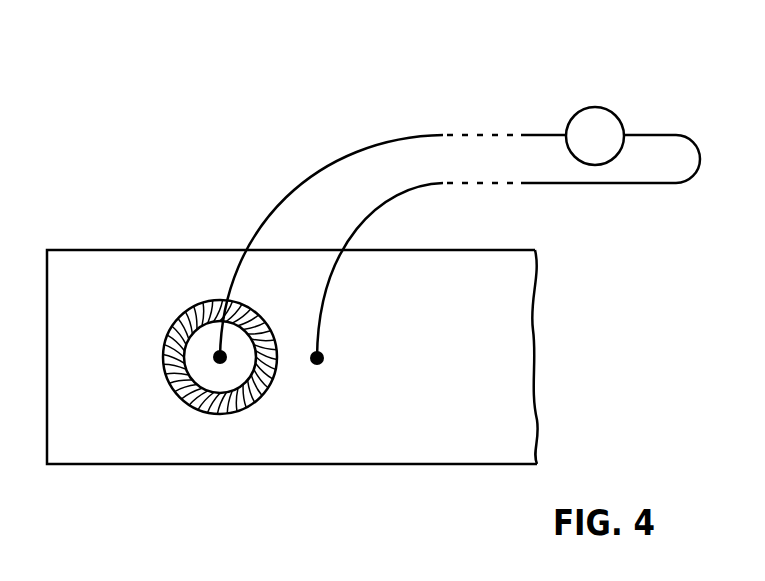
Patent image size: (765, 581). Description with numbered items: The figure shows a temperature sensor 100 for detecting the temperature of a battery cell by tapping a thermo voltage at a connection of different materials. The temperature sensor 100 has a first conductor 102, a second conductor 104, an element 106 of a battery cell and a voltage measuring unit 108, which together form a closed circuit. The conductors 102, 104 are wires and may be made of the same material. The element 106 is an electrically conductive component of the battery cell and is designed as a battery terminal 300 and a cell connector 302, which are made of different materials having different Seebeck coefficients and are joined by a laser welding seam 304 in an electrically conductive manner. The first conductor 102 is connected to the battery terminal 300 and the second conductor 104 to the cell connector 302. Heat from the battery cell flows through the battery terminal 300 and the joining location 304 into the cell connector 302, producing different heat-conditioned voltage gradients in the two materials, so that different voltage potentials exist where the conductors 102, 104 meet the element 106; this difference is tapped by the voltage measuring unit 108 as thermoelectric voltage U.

The temperature sensor 100 is at (200, 138).
The first conductor 102 is at (318, 168).
The second conductor 104 is at (653, 185).
The element of a battery cell 106 is at (92, 249).
The voltage measuring unit 108 is at (593, 107).
The battery terminal 300 is at (222, 384).
The cell connector 302 is at (120, 464).
The laser welding seam 304 is at (270, 412).